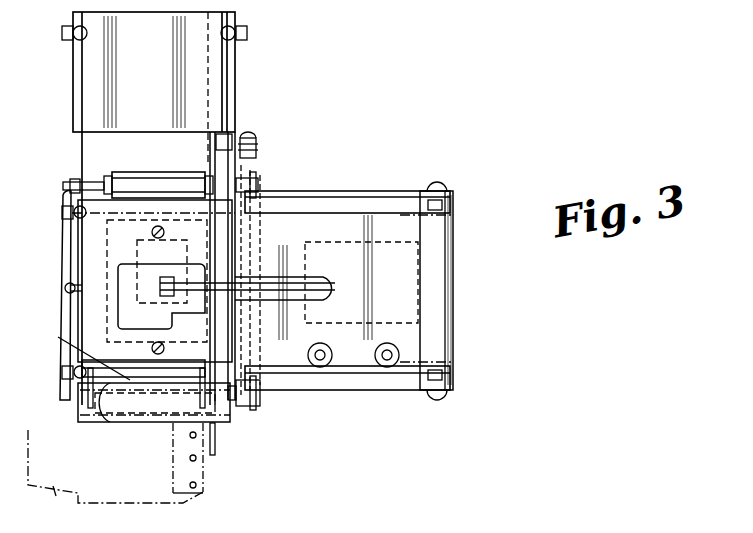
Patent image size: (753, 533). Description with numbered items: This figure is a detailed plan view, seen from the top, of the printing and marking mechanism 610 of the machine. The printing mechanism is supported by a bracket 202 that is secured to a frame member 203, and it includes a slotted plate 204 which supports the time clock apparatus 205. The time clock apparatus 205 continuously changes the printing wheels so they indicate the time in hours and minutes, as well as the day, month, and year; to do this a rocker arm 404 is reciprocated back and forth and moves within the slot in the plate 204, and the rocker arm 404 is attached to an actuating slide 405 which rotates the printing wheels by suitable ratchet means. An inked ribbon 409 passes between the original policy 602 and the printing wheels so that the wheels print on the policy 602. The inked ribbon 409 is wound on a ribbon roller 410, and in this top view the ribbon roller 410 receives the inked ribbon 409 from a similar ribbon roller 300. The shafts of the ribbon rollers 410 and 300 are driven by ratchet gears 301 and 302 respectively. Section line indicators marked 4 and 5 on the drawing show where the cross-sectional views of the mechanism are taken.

The bracket 202 is at (396, 386).
The frame member 203 is at (212, 150).
The slotted plate 204 is at (358, 211).
The time clock apparatus 205 is at (410, 240).
The ribbon roller 300 is at (132, 155).
The ratchet gear 301 is at (256, 395).
The ratchet gear 302 is at (255, 176).
The rocker arm 404 is at (280, 270).
The actuating slide 405 is at (150, 280).
The inked ribbon 409 is at (78, 295).
The ribbon roller 410 is at (104, 423).
The original policy 602 is at (54, 500).
The printing and marking mechanism 610 is at (308, 141).
The section line 4- 4 is at (178, 443).
The section line 5- 5 is at (262, 165).